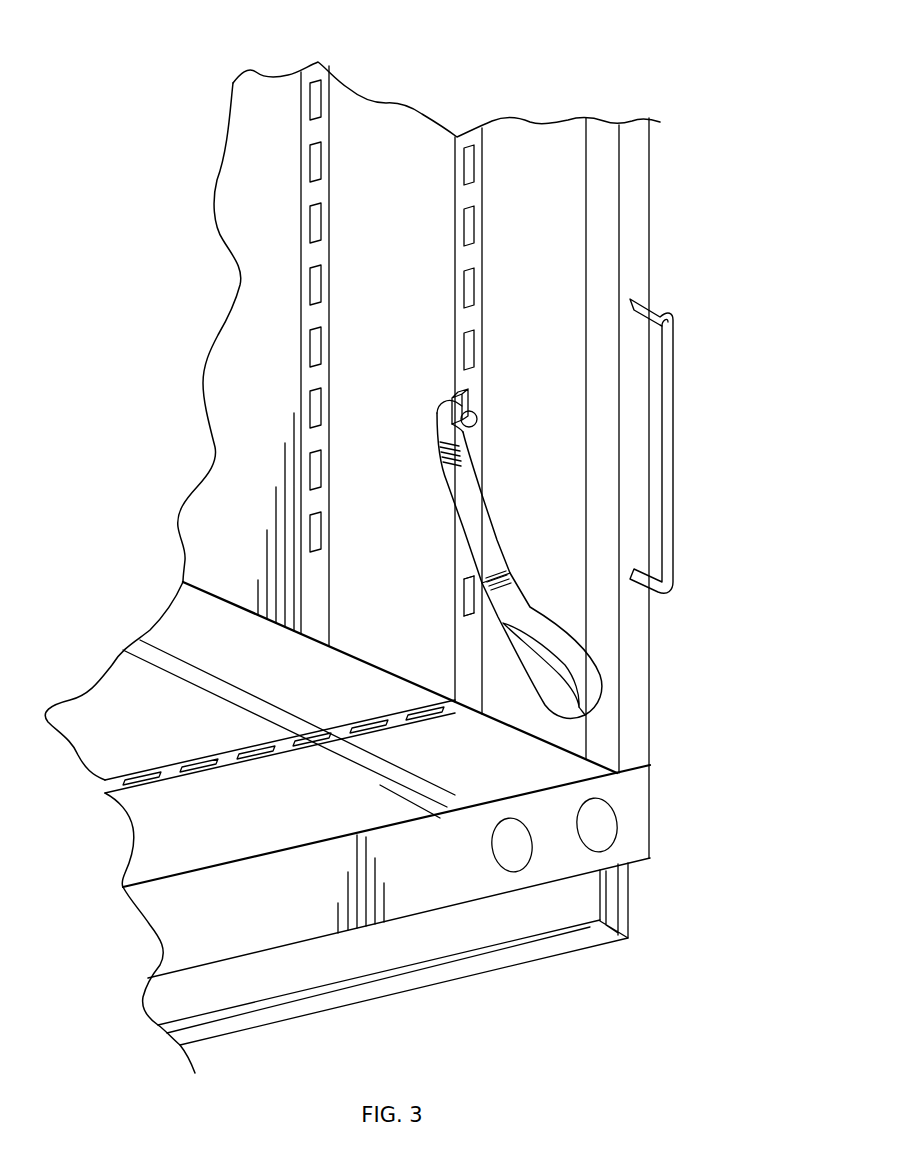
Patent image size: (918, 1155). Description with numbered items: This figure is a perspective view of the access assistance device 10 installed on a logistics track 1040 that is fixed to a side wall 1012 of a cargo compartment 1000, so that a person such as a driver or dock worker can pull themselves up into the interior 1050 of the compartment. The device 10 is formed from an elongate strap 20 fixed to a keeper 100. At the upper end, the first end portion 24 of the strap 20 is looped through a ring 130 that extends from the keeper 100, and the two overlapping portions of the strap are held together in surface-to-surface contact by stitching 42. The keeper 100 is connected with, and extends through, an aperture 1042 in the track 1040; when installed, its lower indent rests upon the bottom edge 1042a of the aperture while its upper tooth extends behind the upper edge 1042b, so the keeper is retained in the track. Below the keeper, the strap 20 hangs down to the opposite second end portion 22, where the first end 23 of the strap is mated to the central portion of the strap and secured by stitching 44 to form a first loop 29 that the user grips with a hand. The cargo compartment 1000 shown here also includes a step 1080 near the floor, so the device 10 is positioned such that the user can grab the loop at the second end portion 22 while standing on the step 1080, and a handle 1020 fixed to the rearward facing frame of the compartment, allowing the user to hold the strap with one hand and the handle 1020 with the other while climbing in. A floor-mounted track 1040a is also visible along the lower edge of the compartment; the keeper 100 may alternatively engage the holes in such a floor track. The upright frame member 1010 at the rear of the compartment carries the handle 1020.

The access assistance device 10 is at (497, 588).
The elongate strap 20 is at (487, 530).
The second end portion 22 is at (583, 707).
The first end 23 is at (480, 583).
The first end portion 24 is at (443, 436).
The first loop 29 is at (563, 683).
The stitching 42 is at (440, 454).
The stitching 44 is at (510, 584).
The keeper 100 is at (474, 396).
The ring 130 is at (441, 404).
The cargo compartment 1000 is at (600, 227).
The upright post 1010 is at (635, 656).
The side wall 1012 is at (422, 137).
The handle 1020 is at (673, 503).
The logistics track 1040 is at (473, 198).
The track 1040a is at (168, 776).
The aperture 1042 is at (466, 352).
The bottom edge 1042a is at (465, 620).
The upper edge 1042b is at (462, 572).
The cargo compartment interior 1050 is at (256, 401).
The step 1080 is at (503, 960).